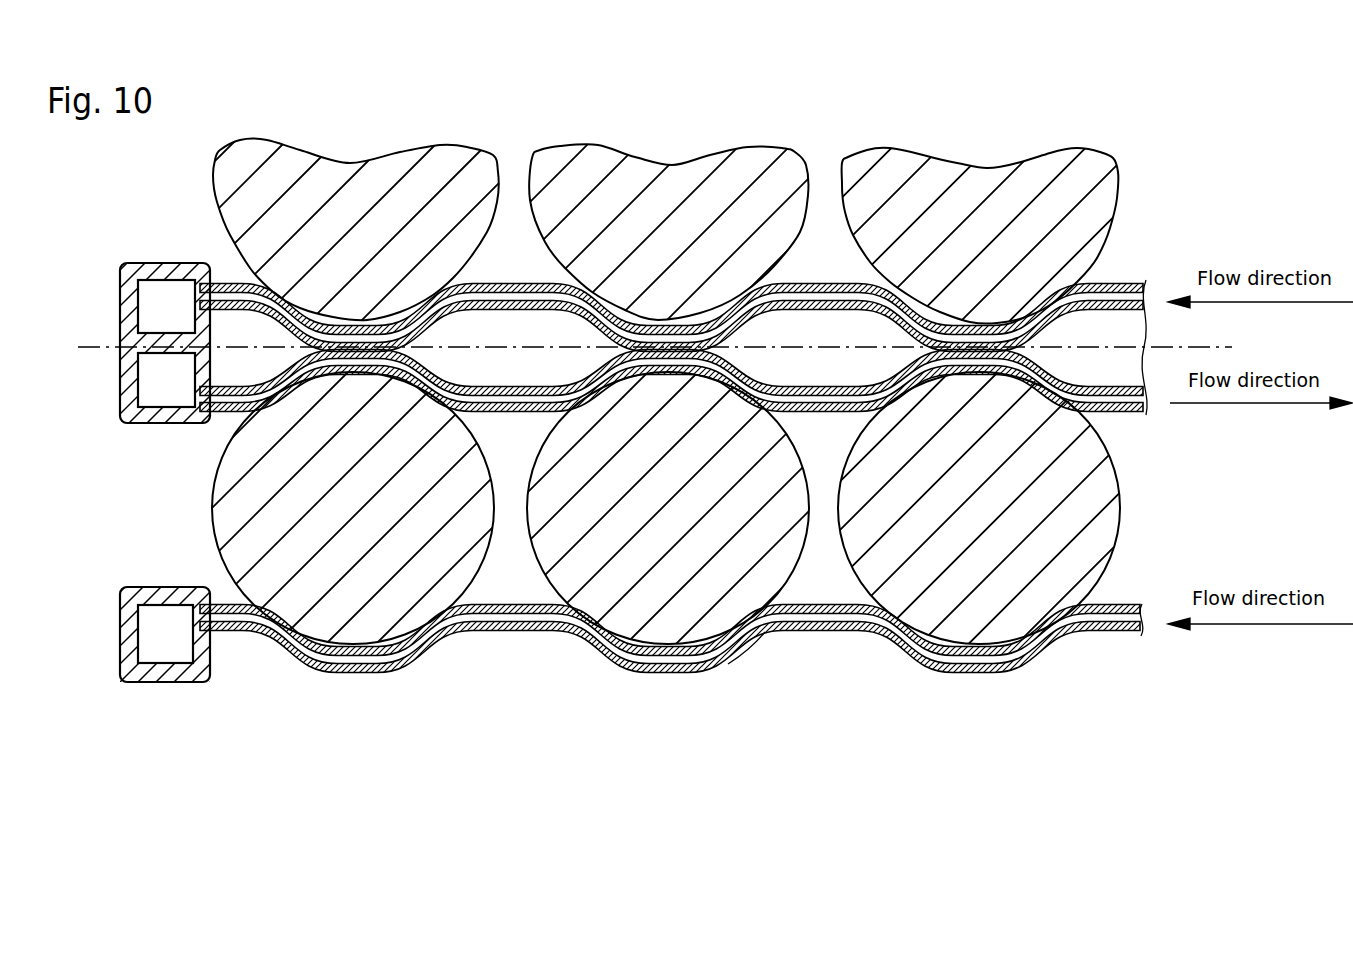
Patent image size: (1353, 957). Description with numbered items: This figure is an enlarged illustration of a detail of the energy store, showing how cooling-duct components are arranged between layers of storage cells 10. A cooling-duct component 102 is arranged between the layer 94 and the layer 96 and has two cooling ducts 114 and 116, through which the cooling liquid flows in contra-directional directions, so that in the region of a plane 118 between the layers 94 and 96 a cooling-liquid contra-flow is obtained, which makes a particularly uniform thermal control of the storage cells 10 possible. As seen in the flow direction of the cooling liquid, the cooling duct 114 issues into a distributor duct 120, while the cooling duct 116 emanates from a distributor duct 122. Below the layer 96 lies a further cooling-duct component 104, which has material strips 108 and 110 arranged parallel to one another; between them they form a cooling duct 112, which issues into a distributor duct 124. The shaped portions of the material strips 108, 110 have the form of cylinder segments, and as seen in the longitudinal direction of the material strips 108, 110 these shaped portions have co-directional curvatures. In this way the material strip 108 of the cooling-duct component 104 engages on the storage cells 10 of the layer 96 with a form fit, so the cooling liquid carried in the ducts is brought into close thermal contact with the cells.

The storage cells 10 is at (1057, 533).
The layer 94 is at (1150, 217).
The layer 96 is at (657, 508).
The cooling-duct component 102 is at (778, 330).
The cooling-duct component 104 is at (670, 675).
The material strip 108 is at (623, 656).
The material strip 110 is at (673, 674).
The cooling duct 112 is at (740, 657).
The cooling duct 114 is at (824, 284).
The cooling duct 116 is at (823, 409).
The plane 118 is at (1188, 349).
The distributor duct 120 is at (163, 302).
The distributor duct 122 is at (163, 383).
The distributor duct 124 is at (163, 637).